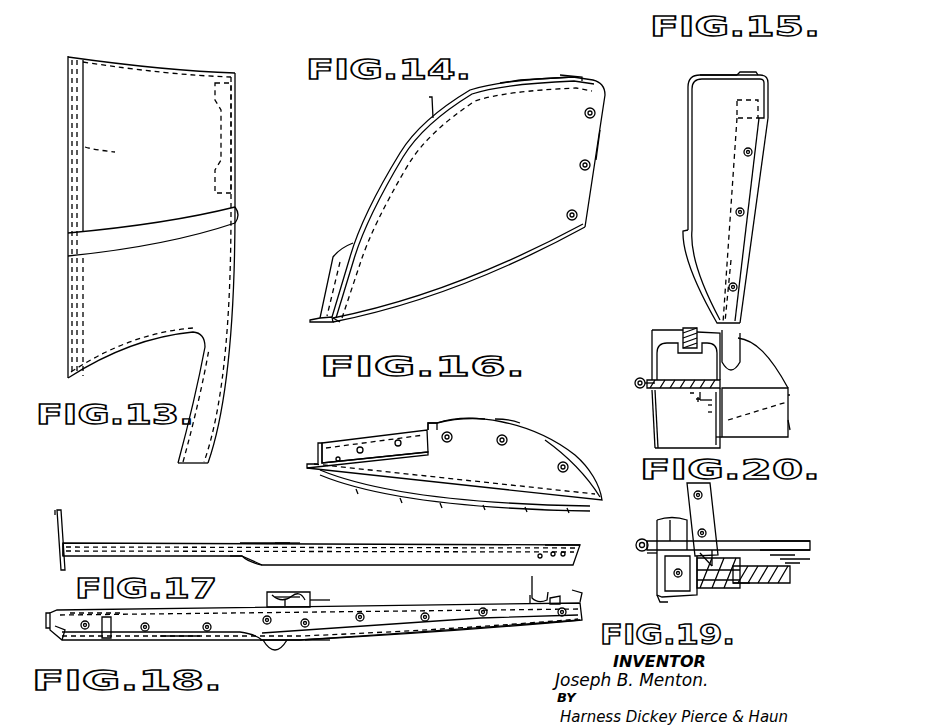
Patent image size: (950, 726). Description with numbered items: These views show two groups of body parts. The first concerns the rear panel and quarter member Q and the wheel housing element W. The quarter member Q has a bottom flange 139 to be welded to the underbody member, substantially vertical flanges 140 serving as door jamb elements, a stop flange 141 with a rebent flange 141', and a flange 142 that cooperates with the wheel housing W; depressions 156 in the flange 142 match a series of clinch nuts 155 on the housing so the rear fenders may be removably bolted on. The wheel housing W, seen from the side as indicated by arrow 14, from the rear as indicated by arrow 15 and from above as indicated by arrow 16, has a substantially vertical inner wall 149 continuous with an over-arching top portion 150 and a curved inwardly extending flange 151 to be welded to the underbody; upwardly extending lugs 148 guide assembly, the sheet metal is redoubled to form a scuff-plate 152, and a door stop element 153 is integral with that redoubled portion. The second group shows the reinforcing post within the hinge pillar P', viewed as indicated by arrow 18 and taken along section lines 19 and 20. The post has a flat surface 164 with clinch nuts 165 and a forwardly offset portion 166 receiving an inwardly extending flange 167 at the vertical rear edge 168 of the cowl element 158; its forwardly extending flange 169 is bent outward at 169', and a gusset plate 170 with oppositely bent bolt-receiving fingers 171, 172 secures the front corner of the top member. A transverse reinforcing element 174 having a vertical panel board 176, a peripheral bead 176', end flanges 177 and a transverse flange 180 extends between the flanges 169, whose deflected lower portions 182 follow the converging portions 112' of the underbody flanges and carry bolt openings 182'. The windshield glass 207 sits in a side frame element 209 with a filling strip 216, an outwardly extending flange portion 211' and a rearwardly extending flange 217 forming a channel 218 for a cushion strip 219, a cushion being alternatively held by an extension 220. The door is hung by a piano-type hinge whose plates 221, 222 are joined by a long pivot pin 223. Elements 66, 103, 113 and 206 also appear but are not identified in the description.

In FIG. 14, the viewing arrow 14 is at (664, 215).
In FIG. 15, the viewing arrow 14 is at (666, 217).
In FIG. 16, the viewing arrow 14 is at (470, 514).
In FIG. 14, the viewing arrow 15 is at (606, 163).
In FIG. 16, the viewing arrow 15 is at (618, 467).
In FIG. 14, the viewing arrow 16 is at (501, 61).
In FIG. 15, the viewing arrow 16 is at (728, 50).
In FIG. 17, the viewing arrow 18 is at (237, 566).
In FIG. 17, the section line 19 is at (37, 562).
In FIG. 17, the section line 20 is at (275, 530).
In FIG. 18, the section line 20 is at (280, 593).
In FIG. 20, the fastener 66 is at (692, 400).
In FIG. 20, the channel member 103 is at (742, 358).
In FIG. 18, the forwardly converging flange portions 112' is at (550, 584).
In FIG. 20, the forwardly converging flange portions 112' is at (806, 401).
In FIG. 18, the post 113 is at (526, 596).
In FIG. 20, the post 113 is at (732, 347).
In FIG. 13, the bottom flange 139 is at (181, 460).
In FIG. 13, the vertical flange 140 is at (78, 118).
In FIG. 13, the stop flange 141 is at (55, 218).
In FIG. 13, the rebent flange 141' is at (118, 152).
In FIG. 13, the wheel housing flange 142 is at (205, 378).
In FIG. 14, the upwardly extending lug 148 is at (428, 98).
In FIG. 16, the upwardly extending lug 148 is at (416, 425).
In FIG. 14, the inner wall 149 is at (378, 188).
In FIG. 15, the inner wall 149 is at (695, 166).
In FIG. 16, the inner wall 149 is at (330, 490).
In FIG. 14, the over-arching portion 150 is at (528, 80).
In FIG. 15, the over-arching portion 150 is at (704, 75).
In FIG. 16, the over-arching portion 150 is at (467, 430).
In FIG. 14, the inwardly extending flange 151 is at (460, 298).
In FIG. 15, the inwardly extending flange 151 is at (687, 262).
In FIG. 16, the inwardly extending flange 151 is at (452, 492).
In FIG. 14, the scuff-plate 152 is at (350, 232).
In FIG. 16, the scuff-plate 152 is at (383, 440).
In FIG. 14, the door stop element 153 is at (325, 296).
In FIG. 16, the door stop element 153 is at (317, 460).
In FIG. 14, the clinch nut 155 is at (568, 77).
In FIG. 15, the clinch nut 155 is at (752, 75).
In FIG. 16, the clinch nut 155 is at (503, 432).
In FIG. 14, the depression 156 is at (372, 306).
In FIG. 18, the cowl element 158 is at (336, 640).
In FIG. 20, the cowl element 158 is at (654, 420).
In FIG. 17, the flat surface 164 is at (262, 543).
In FIG. 18, the flat surface 164 is at (270, 650).
In FIG. 19, the flat surface 164 is at (682, 540).
In FIG. 20, the flat surface 164 is at (686, 355).
In FIG. 18, the clinch nut 165 is at (312, 606).
In FIG. 20, the clinch nut 165 is at (705, 405).
In FIG. 18, the forwardly offset portion 166 is at (297, 648).
In FIG. 19, the forwardly offset portion 166 is at (640, 538).
In FIG. 19, the inwardly extending flange 167 is at (671, 530).
In FIG. 20, the inwardly extending flange 167 is at (690, 394).
In FIG. 20, the rear edge 168 is at (652, 397).
In FIG. 17, the forwardly extending flange 169 is at (321, 532).
In FIG. 18, the forwardly extending flange 169 is at (316, 606).
In FIG. 20, the forwardly extending flange 169 is at (755, 412).
In FIG. 17, the outward bend 169' is at (192, 566).
In FIG. 18, the outward bend 169' is at (91, 601).
In FIG. 19, the outward bend 169' is at (728, 525).
In FIG. 18, the gusset plate 170 is at (105, 638).
In FIG. 19, the gusset plate 170 is at (655, 557).
In FIG. 17, the bolt-receiving finger 171 is at (70, 556).
In FIG. 18, the bolt-receiving finger 171 is at (58, 640).
In FIG. 19, the bolt-receiving finger 171 is at (665, 582).
In FIG. 17, the bolt-receiving finger 172 is at (62, 518).
In FIG. 18, the bolt-receiving finger 172 is at (50, 614).
In FIG. 19, the bolt-receiving finger 172 is at (710, 500).
In FIG. 18, the transverse reinforcing element 174 is at (272, 591).
In FIG. 19, the transverse reinforcing element 174 is at (762, 545).
In FIG. 20, the transverse reinforcing element 174 is at (790, 424).
In FIG. 19, the panel board 176 is at (782, 519).
In FIG. 20, the panel board 176 is at (767, 363).
In FIG. 18, the peripheral bead 176' is at (296, 582).
In FIG. 18, the end flange 177 is at (282, 621).
In FIG. 20, the end flange 177 is at (724, 430).
In FIG. 19, the transverse flange 180 is at (660, 572).
In FIG. 17, the deflected lower portion 182 is at (567, 523).
In FIG. 20, the deflected lower portion 182 is at (686, 429).
In FIG. 18, the bolt opening 182' is at (582, 581).
In FIG. 20, the bolt opening 182' is at (686, 420).
In FIG. 18, the pivot lug 206 is at (280, 645).
In FIG. 19, the windshield glass 207 is at (746, 585).
In FIG. 19, the side element 209 is at (705, 592).
In FIG. 19, the outwardly extending flange portion 211' is at (682, 616).
In FIG. 19, the filling strip 216 is at (735, 587).
In FIG. 19, the rearwardly extending flange 217 is at (662, 598).
In FIG. 19, the rearwardly facing channel 218 is at (790, 548).
In FIG. 19, the cushion strip 219 is at (715, 548).
In FIG. 19, the extension 220 is at (720, 536).
In FIG. 20, the hinge plate 221 is at (648, 390).
In FIG. 20, the hinge plate 222 is at (648, 378).
In FIG. 20, the pivot pin 223 is at (634, 382).
In FIG. 18, the hinge pillar P' is at (180, 645).
In FIG. 19, the hinge pillar P' is at (686, 601).
In FIG. 13, the rear panel and quarter member Q is at (220, 272).
In FIG. 14, the wheel housing element W is at (585, 93).
In FIG. 15, the wheel housing element W is at (745, 178).
In FIG. 16, the wheel housing element W is at (533, 448).